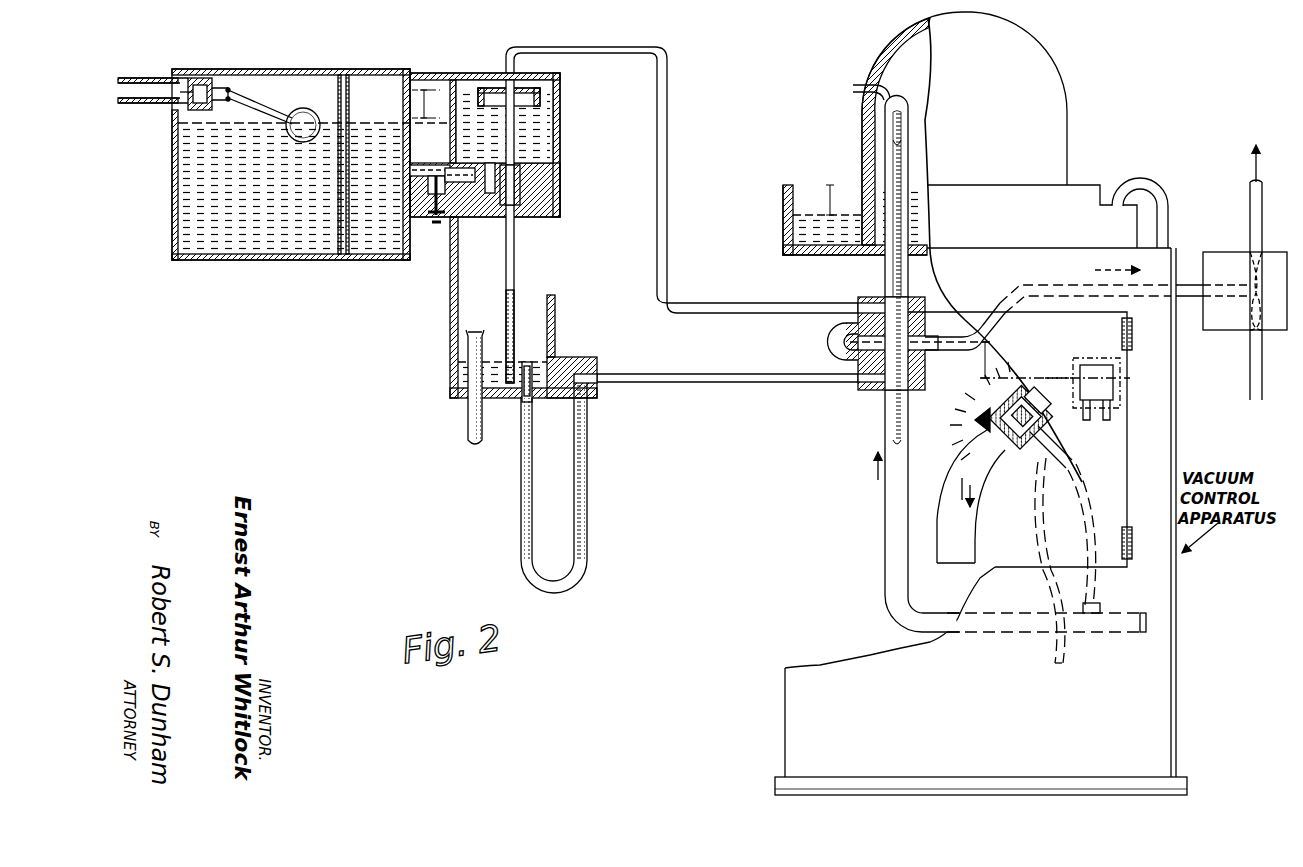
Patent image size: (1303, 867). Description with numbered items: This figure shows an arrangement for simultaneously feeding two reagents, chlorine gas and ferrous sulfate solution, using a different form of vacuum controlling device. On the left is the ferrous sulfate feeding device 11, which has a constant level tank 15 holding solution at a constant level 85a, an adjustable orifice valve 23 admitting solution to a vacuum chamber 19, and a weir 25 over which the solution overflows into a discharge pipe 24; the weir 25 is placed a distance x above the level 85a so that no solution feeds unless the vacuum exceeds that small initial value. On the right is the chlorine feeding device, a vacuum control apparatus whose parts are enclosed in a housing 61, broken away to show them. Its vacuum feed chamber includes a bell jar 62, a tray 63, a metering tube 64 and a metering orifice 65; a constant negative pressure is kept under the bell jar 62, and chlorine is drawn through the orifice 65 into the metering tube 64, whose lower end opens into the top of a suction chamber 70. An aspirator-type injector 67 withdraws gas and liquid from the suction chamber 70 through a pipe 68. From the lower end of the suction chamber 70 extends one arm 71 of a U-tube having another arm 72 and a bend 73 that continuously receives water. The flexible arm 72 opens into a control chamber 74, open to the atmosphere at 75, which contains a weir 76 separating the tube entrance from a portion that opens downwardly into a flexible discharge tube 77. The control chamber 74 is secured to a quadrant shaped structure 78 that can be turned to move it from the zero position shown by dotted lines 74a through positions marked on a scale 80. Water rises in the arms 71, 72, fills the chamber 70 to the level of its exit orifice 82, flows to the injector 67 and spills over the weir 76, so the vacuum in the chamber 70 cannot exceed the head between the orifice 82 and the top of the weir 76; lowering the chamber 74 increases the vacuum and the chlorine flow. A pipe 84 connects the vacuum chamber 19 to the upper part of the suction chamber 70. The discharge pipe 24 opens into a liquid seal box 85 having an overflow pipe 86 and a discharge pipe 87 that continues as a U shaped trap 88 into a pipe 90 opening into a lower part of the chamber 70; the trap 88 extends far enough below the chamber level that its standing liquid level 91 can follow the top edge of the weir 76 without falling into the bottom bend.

The ferrous sulfate feeding device 11 is at (290, 58).
The constant level tank 15 is at (172, 200).
The vacuum chamber 19 is at (560, 133).
The adjustable orifice valve 23 is at (468, 217).
The discharge pipe 24 is at (515, 255).
The weir 25 is at (548, 97).
The housing 61 is at (1163, 427).
The bell jar 62 is at (876, 49).
The tray 63 is at (783, 192).
The metering tube 64 is at (885, 122).
The metering orifice 65 is at (856, 88).
The injector 67 is at (1250, 272).
The pipe 68 is at (1045, 285).
The suction chamber 70 is at (838, 336).
The U-tube arm 71 is at (888, 535).
The U-tube arm 72 is at (1000, 512).
The bend 73 is at (987, 632).
The control chamber 74 is at (990, 450).
The zero position 74a is at (1120, 378).
The atmospheric opening 75 is at (1000, 398).
The weir 76 is at (1002, 448).
The flexible discharge tube 77 is at (1040, 529).
The quadrant shaped structure 78 is at (945, 520).
The scale 80 is at (970, 421).
The exit orifice 82 is at (920, 340).
The pipe 84 is at (667, 237).
The liquid seal box 85 is at (450, 350).
The constant level 85a is at (365, 128).
The overflow pipe 86 is at (468, 425).
The discharge pipe 87 is at (522, 405).
The U shaped trap 88 is at (553, 578).
The pipe 90 is at (660, 383).
The standing liquid level 91 is at (532, 400).